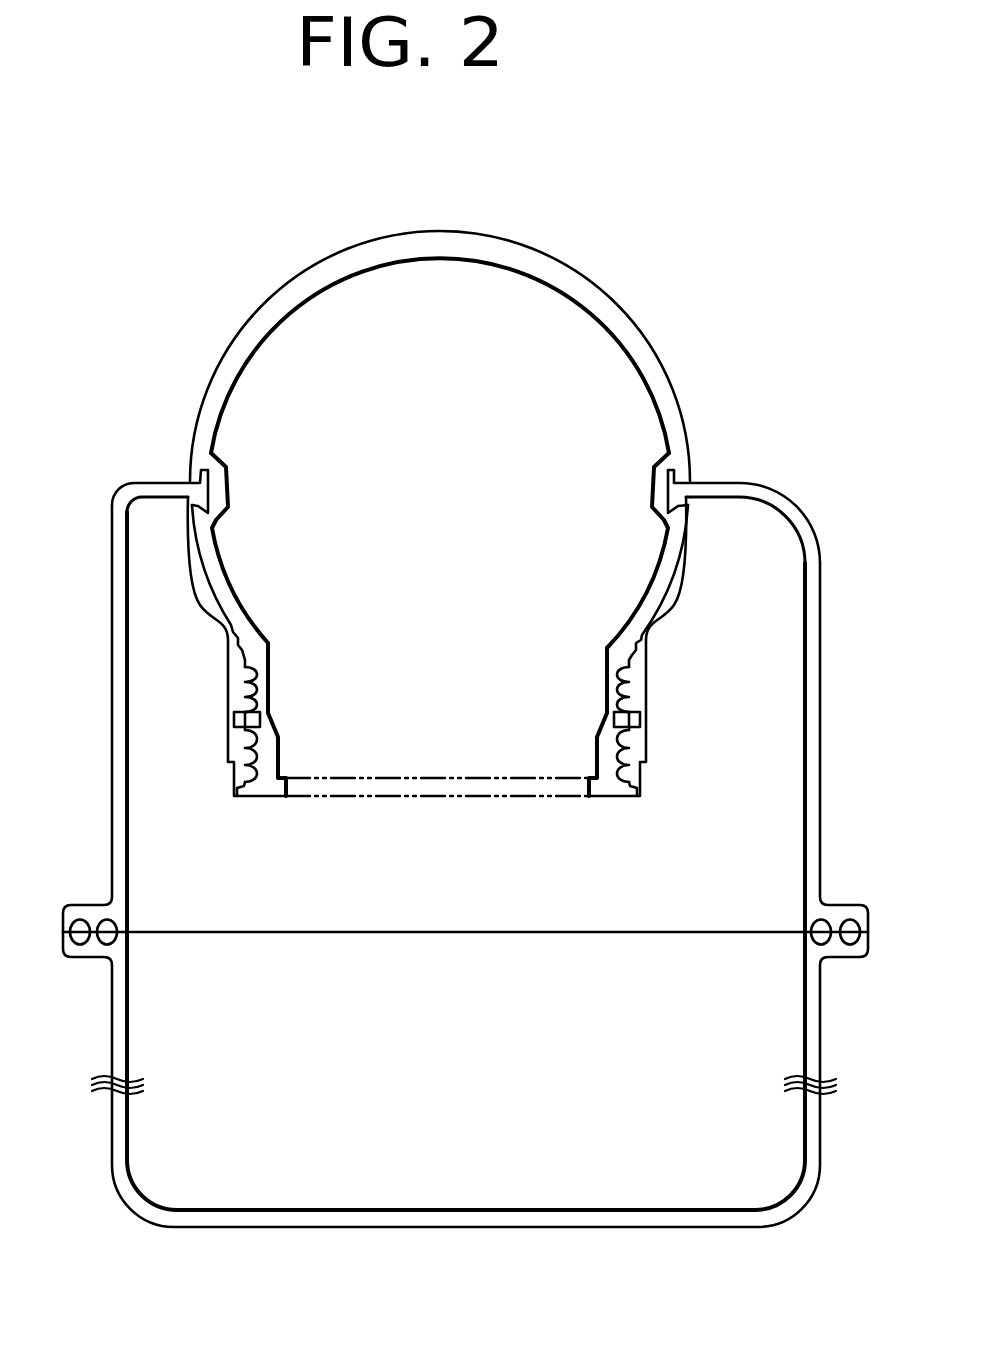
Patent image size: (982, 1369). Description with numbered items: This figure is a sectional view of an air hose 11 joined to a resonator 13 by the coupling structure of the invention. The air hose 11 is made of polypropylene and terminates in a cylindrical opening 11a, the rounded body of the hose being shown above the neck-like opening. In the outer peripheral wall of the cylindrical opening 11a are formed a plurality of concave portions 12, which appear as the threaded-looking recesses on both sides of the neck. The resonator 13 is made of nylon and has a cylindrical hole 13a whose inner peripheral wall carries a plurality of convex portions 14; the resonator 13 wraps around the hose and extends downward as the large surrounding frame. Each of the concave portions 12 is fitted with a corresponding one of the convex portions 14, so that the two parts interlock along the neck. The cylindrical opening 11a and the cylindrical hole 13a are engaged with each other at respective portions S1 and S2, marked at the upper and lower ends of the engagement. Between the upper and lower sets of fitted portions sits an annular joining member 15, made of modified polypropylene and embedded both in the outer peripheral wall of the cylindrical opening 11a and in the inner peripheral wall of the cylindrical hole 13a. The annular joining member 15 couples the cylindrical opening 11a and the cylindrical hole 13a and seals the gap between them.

The air hose 11 is at (627, 322).
The cylindrical opening 11a is at (604, 662).
The concave portions 12 is at (268, 673).
The resonator 13 is at (812, 528).
The cylindrical hole 13a is at (647, 695).
The convex portions 14 is at (243, 703).
The annular joining member 15 is at (268, 710).
The engagement portion S1 is at (626, 648).
The engagement portion S2 is at (627, 798).